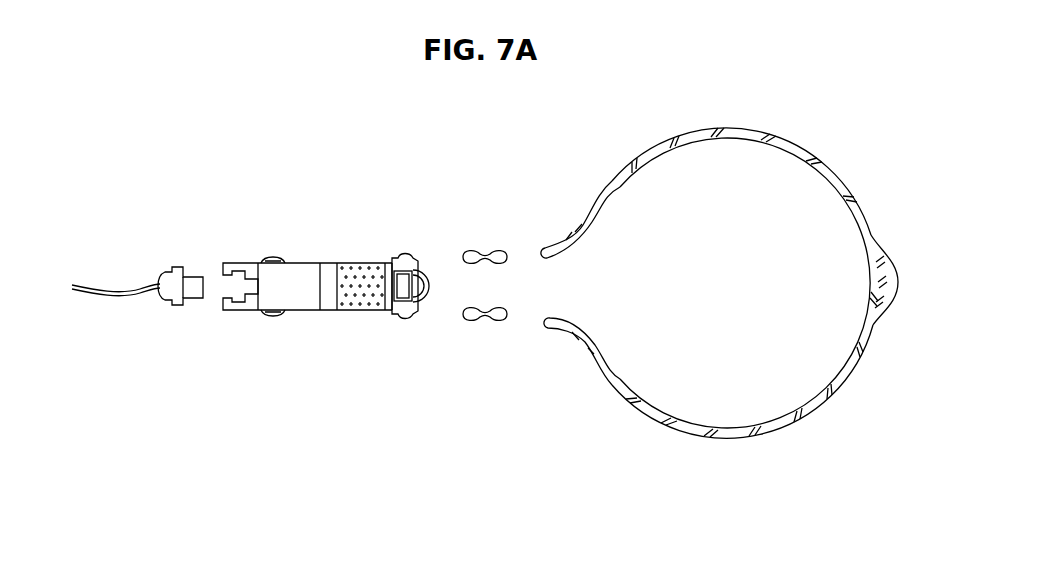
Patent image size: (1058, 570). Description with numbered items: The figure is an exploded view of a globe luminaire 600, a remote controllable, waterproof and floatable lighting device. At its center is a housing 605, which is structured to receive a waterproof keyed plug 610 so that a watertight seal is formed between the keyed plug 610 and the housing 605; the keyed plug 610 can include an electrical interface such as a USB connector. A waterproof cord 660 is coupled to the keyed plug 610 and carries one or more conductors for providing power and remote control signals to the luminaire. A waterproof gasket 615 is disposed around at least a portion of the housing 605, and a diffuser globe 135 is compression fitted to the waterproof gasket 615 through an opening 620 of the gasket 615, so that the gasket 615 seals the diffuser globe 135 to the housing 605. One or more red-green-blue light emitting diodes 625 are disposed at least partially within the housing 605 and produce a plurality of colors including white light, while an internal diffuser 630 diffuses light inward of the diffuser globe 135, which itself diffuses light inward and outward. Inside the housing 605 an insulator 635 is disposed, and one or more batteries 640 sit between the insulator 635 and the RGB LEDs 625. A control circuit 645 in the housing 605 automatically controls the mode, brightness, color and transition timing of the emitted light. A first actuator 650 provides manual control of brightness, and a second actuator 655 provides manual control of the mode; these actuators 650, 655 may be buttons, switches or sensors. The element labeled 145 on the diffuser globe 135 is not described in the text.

The globe luminaire 600 is at (536, 158).
The housing 605 is at (242, 262).
The keyed plug 610 is at (178, 307).
The waterproof gasket 615 is at (473, 322).
The opening 620 is at (556, 289).
The red-green-blue light emitting diodes 625 is at (420, 312).
The internal diffuser 630 is at (418, 261).
The insulator 635 is at (330, 276).
The batteries 640 is at (355, 310).
The control circuit 645 is at (297, 285).
The first actuator 650 is at (273, 256).
The second actuator 655 is at (269, 317).
The waterproof cord 660 is at (117, 284).
The diffuser globe 135 is at (826, 142).
The ring bump 145 is at (903, 244).